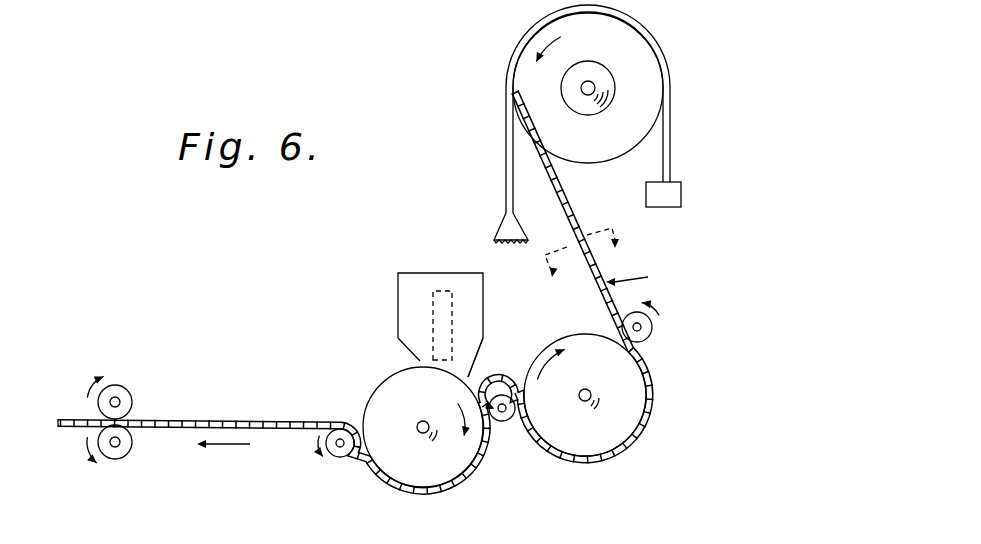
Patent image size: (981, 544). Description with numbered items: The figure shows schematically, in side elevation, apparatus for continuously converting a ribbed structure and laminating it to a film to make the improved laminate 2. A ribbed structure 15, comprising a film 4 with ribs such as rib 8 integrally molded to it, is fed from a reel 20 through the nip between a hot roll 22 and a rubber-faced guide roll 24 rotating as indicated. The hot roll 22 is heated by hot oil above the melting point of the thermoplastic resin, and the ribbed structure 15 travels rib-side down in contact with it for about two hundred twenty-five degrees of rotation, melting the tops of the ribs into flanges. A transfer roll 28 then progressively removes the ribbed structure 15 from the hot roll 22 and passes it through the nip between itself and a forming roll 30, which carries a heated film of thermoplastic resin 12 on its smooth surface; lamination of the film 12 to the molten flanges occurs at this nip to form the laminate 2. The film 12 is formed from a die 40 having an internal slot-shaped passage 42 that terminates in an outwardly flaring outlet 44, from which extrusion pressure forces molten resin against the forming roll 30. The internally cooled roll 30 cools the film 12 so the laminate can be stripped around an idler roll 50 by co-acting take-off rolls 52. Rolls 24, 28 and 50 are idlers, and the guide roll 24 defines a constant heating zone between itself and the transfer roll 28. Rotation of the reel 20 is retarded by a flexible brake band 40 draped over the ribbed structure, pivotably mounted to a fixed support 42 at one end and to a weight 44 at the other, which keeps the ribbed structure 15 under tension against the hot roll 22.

The laminate 2 is at (243, 414).
The film 4 is at (561, 194).
The rib 8 is at (578, 238).
The film of thermoplastic resin 12 is at (468, 382).
The ribbed structure 15 is at (641, 271).
The reel 20 is at (643, 60).
The hot roll 22 is at (602, 439).
The rubber-faced guide roll 24 is at (652, 330).
The transfer roll 28 is at (504, 422).
The forming roll 30 is at (417, 473).
The die 40 is at (670, 128).
The slot-shaped passage 42 is at (492, 232).
The outwardly flaring outlet 44 is at (681, 195).
The roll 50 is at (340, 459).
The take-off rolls 52 is at (133, 395).